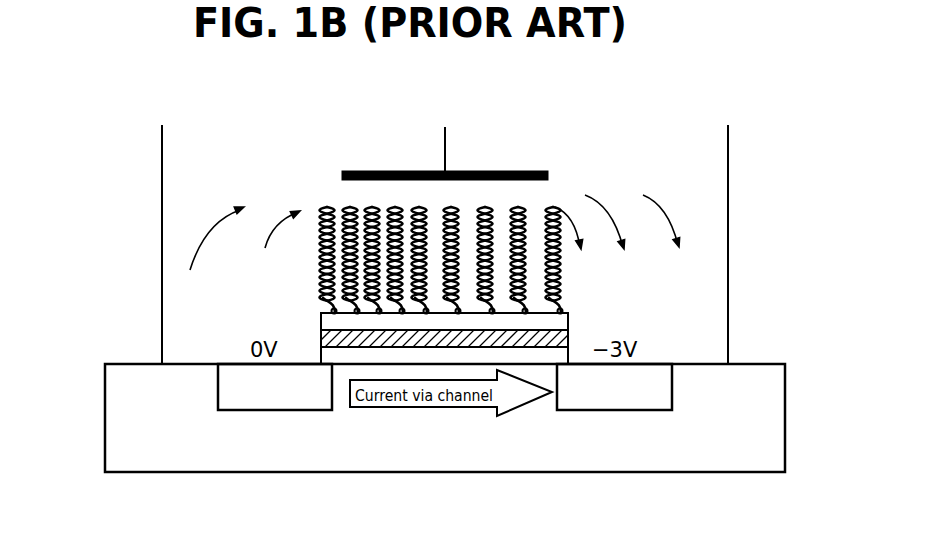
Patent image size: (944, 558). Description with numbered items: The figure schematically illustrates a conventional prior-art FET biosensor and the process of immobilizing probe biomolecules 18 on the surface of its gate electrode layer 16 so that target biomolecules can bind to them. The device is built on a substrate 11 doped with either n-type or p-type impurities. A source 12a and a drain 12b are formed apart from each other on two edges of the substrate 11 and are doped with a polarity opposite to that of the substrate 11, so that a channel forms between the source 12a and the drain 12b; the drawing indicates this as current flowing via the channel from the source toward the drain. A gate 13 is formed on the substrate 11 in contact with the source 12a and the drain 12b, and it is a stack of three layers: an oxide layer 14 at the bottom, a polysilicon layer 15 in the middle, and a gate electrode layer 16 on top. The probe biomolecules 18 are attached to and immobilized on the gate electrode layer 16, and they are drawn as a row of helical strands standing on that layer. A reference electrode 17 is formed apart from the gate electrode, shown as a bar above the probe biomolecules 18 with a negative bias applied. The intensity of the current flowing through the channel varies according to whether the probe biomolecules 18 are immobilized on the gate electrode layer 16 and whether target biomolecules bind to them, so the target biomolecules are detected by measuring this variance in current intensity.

The substrate 11 is at (128, 443).
The source 12a is at (242, 400).
The drain 12b is at (580, 397).
The gate 13 is at (389, 308).
The oxide layer 14 is at (333, 357).
The polysilicon layer 15 is at (333, 330).
The gate electrode layer 16 is at (332, 308).
The reference electrode 17 is at (548, 171).
The probe biomolecules 18 is at (322, 218).